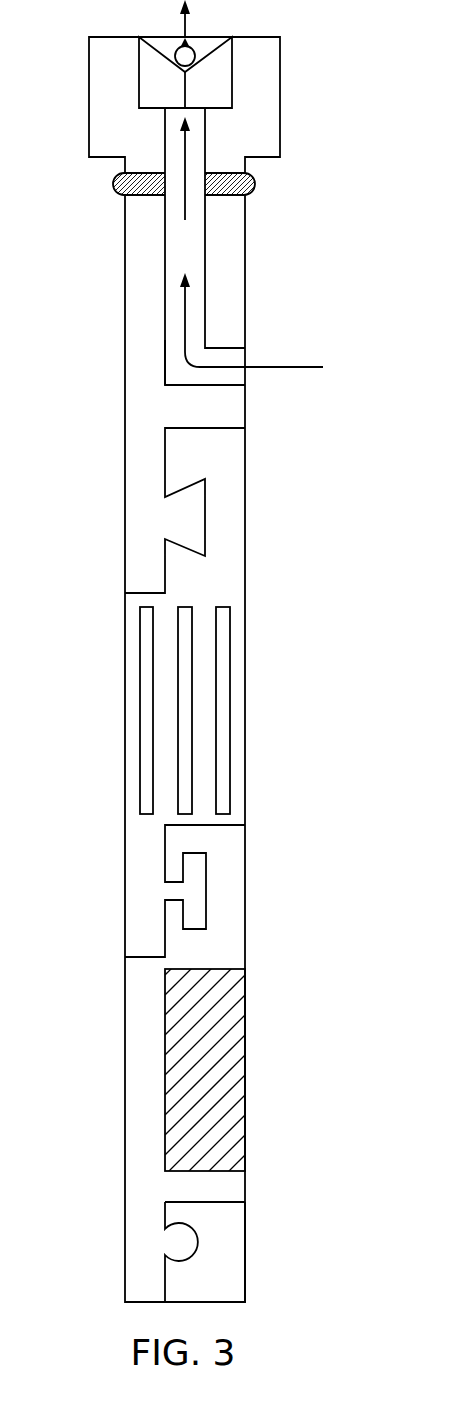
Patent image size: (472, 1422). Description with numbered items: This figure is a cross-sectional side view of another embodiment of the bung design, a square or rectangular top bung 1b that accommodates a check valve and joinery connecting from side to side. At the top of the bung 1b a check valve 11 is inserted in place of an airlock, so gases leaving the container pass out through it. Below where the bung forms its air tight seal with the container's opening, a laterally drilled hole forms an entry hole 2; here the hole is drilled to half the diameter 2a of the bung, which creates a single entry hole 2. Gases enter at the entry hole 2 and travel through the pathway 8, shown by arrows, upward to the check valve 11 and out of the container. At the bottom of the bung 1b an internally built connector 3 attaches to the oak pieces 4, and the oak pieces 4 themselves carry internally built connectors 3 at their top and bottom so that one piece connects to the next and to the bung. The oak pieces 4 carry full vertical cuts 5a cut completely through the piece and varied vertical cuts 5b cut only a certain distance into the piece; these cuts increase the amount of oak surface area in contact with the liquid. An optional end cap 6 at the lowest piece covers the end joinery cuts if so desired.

The square or rectangular top bung 1b is at (281, 118).
The check valve 11 is at (233, 70).
The entry hole 2 is at (246, 382).
The half the diameter 2a is at (162, 360).
The internally built connector 3 is at (185, 518).
The oak pieces 4 is at (125, 710).
The full vertical cuts 5a is at (230, 728).
The varied vertical cuts 5b is at (246, 1063).
The end cap 6 is at (246, 1248).
The pathway 8 is at (189, 25).